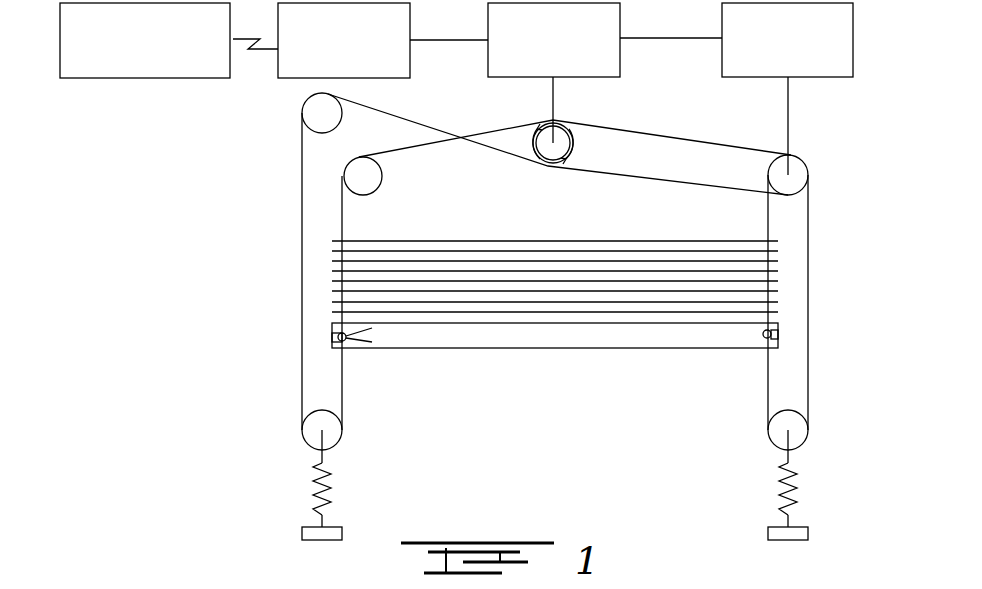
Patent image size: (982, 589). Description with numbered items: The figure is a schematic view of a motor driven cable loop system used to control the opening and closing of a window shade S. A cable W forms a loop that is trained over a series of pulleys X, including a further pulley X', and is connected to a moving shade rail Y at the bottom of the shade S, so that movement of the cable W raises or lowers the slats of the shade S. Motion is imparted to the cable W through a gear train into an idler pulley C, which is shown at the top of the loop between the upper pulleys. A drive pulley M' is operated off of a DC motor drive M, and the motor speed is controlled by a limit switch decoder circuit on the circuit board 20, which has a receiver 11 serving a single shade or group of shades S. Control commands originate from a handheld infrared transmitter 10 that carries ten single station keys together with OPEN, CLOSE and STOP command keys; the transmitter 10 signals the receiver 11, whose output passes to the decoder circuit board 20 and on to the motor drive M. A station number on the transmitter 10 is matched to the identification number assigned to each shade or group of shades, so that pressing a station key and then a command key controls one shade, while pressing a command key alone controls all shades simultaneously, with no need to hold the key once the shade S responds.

The transmitter 10 is at (165, 68).
The receiver 11 is at (385, 32).
The limit switch decoder circuit board 20 is at (593, 22).
The DC motor drive M is at (771, 48).
The drive pulley M' is at (805, 168).
The idler pulley C is at (556, 158).
The cable W is at (302, 277).
The pulleys X is at (549, 303).
The pulley X' is at (307, 111).
The window shade S is at (407, 292).
The moving shade rail Y is at (542, 333).